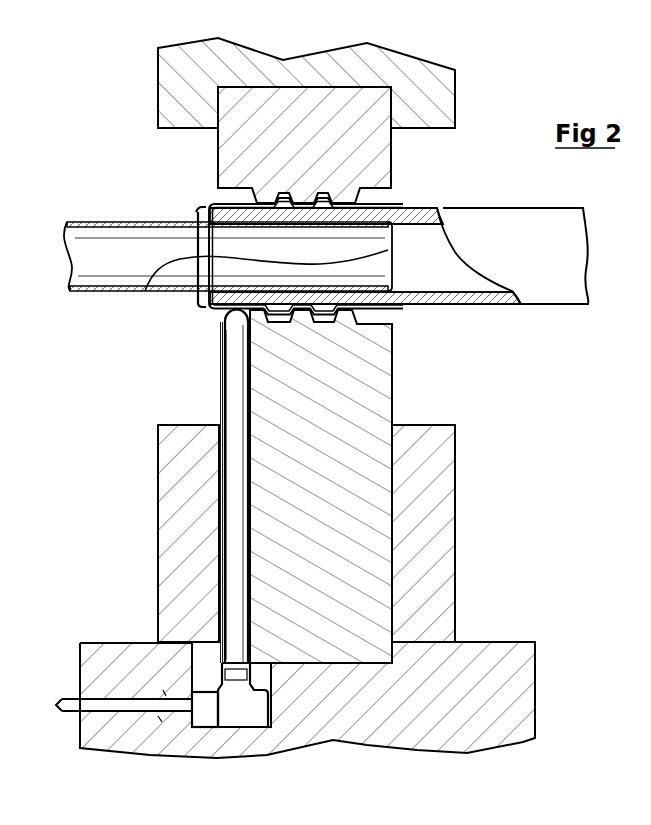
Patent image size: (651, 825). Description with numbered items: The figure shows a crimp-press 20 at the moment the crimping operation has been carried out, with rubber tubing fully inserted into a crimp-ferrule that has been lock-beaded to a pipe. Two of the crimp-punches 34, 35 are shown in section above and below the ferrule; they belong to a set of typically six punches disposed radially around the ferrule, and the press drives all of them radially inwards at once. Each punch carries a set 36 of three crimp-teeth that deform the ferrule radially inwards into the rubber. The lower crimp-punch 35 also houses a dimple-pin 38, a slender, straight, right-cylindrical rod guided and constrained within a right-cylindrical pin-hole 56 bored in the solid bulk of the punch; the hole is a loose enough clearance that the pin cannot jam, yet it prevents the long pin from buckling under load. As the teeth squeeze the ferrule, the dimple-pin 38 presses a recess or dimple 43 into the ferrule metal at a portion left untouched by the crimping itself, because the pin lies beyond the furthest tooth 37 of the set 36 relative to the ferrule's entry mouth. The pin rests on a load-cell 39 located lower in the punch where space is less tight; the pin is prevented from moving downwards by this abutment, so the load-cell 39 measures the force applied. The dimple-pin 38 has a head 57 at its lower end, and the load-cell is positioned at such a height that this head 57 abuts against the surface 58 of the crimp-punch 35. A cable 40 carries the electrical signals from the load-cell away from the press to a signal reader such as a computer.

The crimp-press 20 is at (122, 79).
The crimp-punch 34 is at (327, 172).
The crimp-punch 35 is at (333, 511).
The set of crimp-teeth 36 is at (317, 349).
The furthest crimp-tooth 37 is at (268, 325).
The dimple-pin 38 is at (236, 520).
The load-cell 39 is at (235, 705).
The cable 40 is at (62, 712).
The dimple 43 is at (216, 311).
The pin-hole 56 is at (226, 582).
The head 57 is at (225, 678).
The surface 58 is at (257, 667).